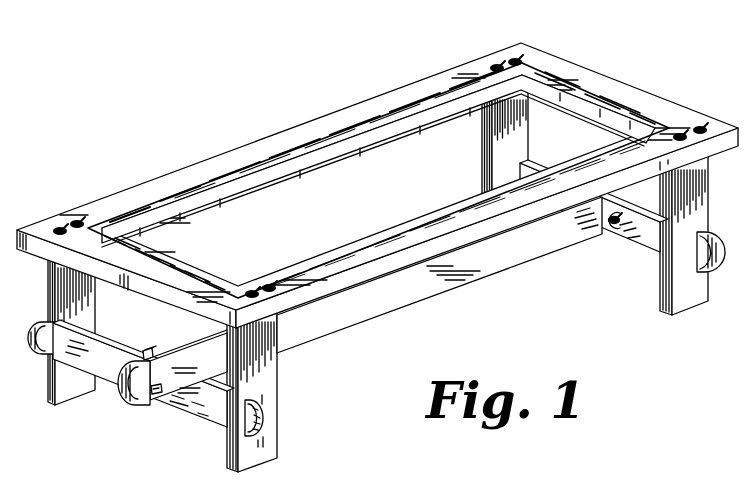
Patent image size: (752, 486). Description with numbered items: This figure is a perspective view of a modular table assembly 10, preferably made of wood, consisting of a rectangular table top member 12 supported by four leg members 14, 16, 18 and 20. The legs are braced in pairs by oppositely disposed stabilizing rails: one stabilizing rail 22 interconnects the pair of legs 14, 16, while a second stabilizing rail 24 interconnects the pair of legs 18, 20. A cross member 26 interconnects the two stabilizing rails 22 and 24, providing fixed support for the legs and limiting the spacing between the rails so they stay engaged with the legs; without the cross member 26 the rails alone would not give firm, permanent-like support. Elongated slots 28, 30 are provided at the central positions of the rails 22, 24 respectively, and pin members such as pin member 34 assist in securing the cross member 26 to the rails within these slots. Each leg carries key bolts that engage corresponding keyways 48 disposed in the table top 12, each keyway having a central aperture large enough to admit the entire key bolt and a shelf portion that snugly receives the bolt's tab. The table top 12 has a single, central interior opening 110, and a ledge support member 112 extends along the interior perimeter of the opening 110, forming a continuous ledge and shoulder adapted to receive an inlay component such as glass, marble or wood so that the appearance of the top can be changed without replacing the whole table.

The modular table assembly 10 is at (230, 112).
The table top member 12 is at (368, 110).
The leg member 14 is at (688, 302).
The leg member 16 is at (498, 148).
The leg member 18 is at (268, 412).
The leg member 20 is at (80, 390).
The stabilizing rail 22 is at (655, 237).
The stabilizing rail 24 is at (223, 417).
The cross member 26 is at (377, 303).
The elongated slot 28 is at (613, 223).
The elongated slot 30 is at (157, 392).
The pin member 34 is at (148, 352).
The keyway 48 is at (497, 66).
The interior opening 110 is at (200, 235).
The ledge support member 112 is at (212, 190).